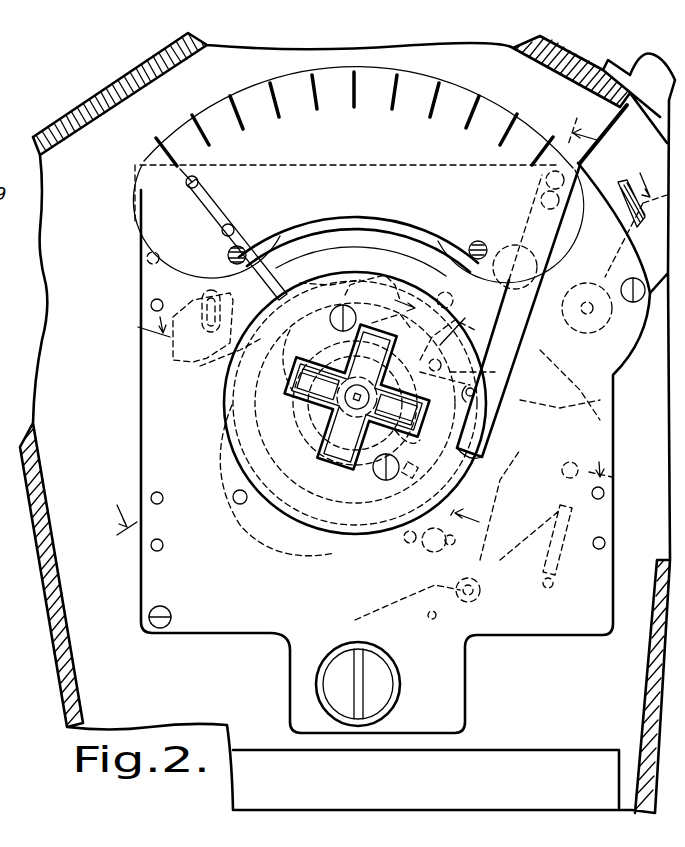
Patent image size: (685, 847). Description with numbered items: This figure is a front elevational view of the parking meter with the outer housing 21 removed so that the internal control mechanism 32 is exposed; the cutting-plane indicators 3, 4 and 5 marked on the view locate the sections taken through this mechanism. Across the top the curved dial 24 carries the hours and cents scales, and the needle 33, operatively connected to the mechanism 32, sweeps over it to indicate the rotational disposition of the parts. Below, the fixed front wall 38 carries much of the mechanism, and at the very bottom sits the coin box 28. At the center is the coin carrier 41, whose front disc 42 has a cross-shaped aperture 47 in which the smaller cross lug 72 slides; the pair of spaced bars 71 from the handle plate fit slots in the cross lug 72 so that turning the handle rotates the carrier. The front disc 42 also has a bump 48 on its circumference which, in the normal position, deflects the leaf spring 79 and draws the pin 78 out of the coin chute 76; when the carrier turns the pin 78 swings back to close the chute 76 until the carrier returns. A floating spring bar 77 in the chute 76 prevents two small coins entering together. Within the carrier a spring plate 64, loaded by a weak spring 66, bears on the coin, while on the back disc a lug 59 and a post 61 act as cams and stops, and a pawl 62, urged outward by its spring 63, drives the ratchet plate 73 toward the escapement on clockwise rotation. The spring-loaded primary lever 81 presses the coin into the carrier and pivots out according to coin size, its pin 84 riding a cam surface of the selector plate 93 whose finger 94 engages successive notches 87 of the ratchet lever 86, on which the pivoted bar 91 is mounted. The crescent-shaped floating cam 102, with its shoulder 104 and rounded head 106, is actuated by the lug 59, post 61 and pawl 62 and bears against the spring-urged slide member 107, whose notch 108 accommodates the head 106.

The housing 21 is at (101, 86).
The dial 24 is at (160, 153).
The coin box 28 is at (545, 782).
The control mechanism 32 is at (131, 418).
The needle 33 is at (226, 218).
The front wall 38 is at (578, 632).
The coin carrier 41 is at (222, 416).
The front disc 42 is at (322, 283).
The cross-shaped aperture 47 is at (385, 333).
The bump 48 is at (468, 392).
The lug 59 is at (437, 305).
The post 61 is at (380, 293).
The pawl 62 is at (352, 495).
The spring 63 is at (320, 480).
The spring plate 64 is at (452, 330).
The weak spring 66 is at (416, 362).
The bars 71 is at (292, 355).
The cross lug 72 is at (357, 397).
The ratchet plate 73 is at (405, 445).
The coin chute 76 is at (603, 110).
The spring bar 77 is at (622, 182).
The pin 78 is at (473, 364).
The leaf spring 79 is at (485, 450).
The primary lever 81 is at (500, 530).
The pin 84 is at (522, 480).
The ratchet lever 86 is at (570, 385).
The notches 87 is at (570, 462).
The pivoted bar 91 is at (605, 330).
The selector plate 93 is at (410, 590).
The finger 94 is at (560, 412).
The floating cam 102 is at (258, 528).
The shoulder 104 is at (422, 538).
The head 106 is at (240, 355).
The slide member 107 is at (268, 298).
The notch 108 is at (190, 372).
The section line 3- 3 is at (383, 353).
The section line 4- 4 is at (375, 397).
The section line 5- 5 is at (523, 321).